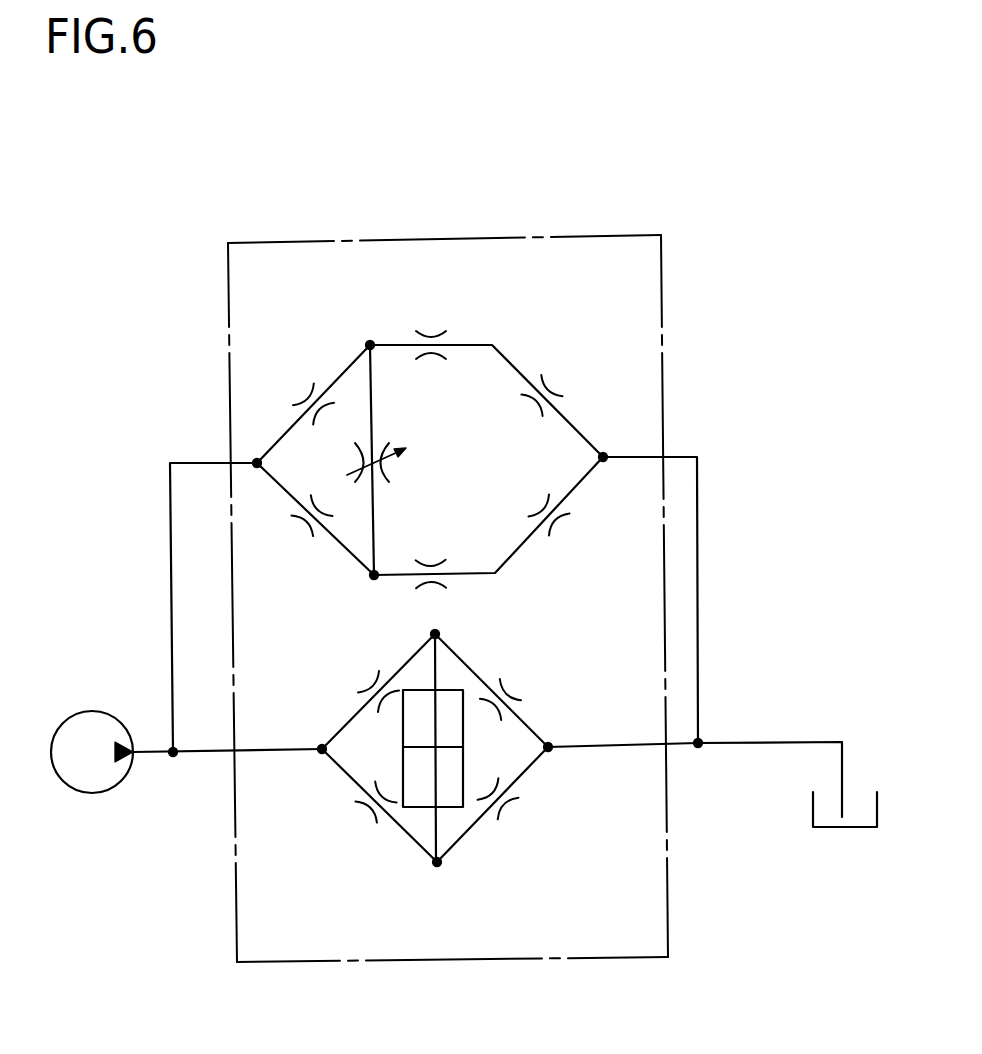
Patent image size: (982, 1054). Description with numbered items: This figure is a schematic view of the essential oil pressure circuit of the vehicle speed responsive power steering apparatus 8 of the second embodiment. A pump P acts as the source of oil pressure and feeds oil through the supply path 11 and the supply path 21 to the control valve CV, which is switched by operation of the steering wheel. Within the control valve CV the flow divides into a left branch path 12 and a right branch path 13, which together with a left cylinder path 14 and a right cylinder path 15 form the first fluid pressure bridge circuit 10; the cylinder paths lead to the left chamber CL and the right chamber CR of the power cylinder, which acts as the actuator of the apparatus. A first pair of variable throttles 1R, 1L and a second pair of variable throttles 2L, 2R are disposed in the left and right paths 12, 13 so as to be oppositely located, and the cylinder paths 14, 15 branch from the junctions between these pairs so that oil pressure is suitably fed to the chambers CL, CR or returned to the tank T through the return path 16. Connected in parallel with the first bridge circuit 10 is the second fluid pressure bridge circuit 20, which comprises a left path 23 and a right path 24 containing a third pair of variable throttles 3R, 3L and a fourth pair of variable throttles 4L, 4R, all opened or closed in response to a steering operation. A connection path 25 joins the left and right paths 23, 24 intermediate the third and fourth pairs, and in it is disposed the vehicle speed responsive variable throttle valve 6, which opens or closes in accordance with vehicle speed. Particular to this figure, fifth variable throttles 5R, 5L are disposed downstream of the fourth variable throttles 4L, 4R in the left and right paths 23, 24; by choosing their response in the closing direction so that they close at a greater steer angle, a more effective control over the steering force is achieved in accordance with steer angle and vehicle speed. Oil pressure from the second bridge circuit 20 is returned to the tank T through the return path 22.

The vehicle speed responsive power steering apparatus 8 is at (760, 292).
The first fluid pressure bridge circuit 10 is at (444, 767).
The supply path 11 is at (203, 754).
The left branch path 12 is at (407, 837).
The right branch path 13 is at (460, 653).
The left cylinder path 14 is at (457, 840).
The right cylinder path 15 is at (433, 673).
The return path 16 is at (749, 745).
The second fluid pressure bridge circuit 20 is at (430, 437).
The supply path 21 is at (197, 462).
The return path 22 is at (700, 591).
The left path 23 is at (343, 552).
The right path 24 is at (332, 382).
The connection path 25 is at (367, 383).
The vehicle speed responsive variable throttle valve 6 is at (364, 460).
The variable throttle 1L is at (359, 690).
The variable throttle 1R is at (361, 809).
The variable throttle 2L is at (515, 807).
The variable throttle 2R is at (520, 692).
The variable throttle 3L is at (299, 395).
The variable throttle 3R is at (301, 525).
The variable throttle 4L is at (431, 557).
The variable throttle 4R is at (432, 328).
The fifth variable throttle 5L is at (553, 388).
The fifth variable throttle 5R is at (562, 523).
The pump P is at (92, 771).
The tank T is at (845, 828).
The control valve CV is at (468, 963).
The right chamber CR is at (418, 723).
The left chamber CL is at (417, 773).